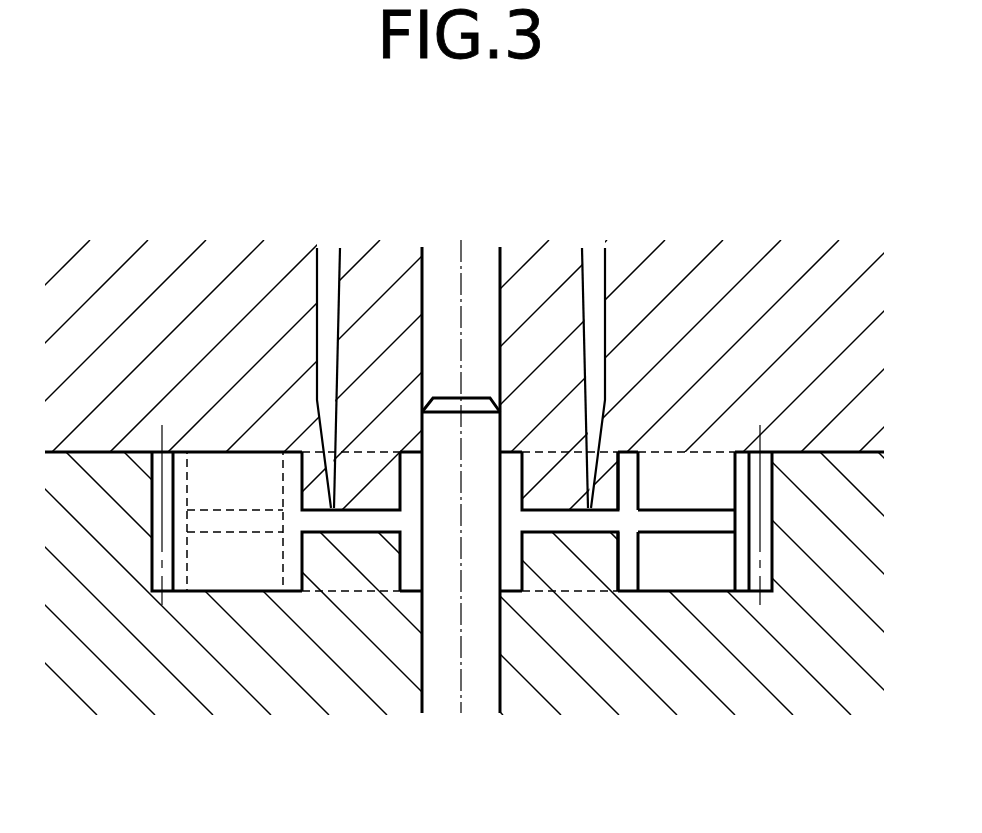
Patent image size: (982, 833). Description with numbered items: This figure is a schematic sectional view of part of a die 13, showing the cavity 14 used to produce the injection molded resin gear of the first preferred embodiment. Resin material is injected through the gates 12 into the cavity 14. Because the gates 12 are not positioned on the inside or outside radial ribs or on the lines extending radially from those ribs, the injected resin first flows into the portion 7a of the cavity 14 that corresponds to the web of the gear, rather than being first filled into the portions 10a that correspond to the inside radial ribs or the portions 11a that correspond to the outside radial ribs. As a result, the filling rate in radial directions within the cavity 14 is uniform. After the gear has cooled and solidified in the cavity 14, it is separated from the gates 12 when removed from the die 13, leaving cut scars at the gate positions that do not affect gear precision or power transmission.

The die 13 is at (809, 226).
The gate 12 is at (327, 270).
The portion corresponding to the inside radial rib 10a is at (363, 468).
The portion corresponding to the outside radial rib 11a is at (217, 455).
The portion corresponding to the web 7a is at (340, 520).
The cavity 14 is at (585, 531).